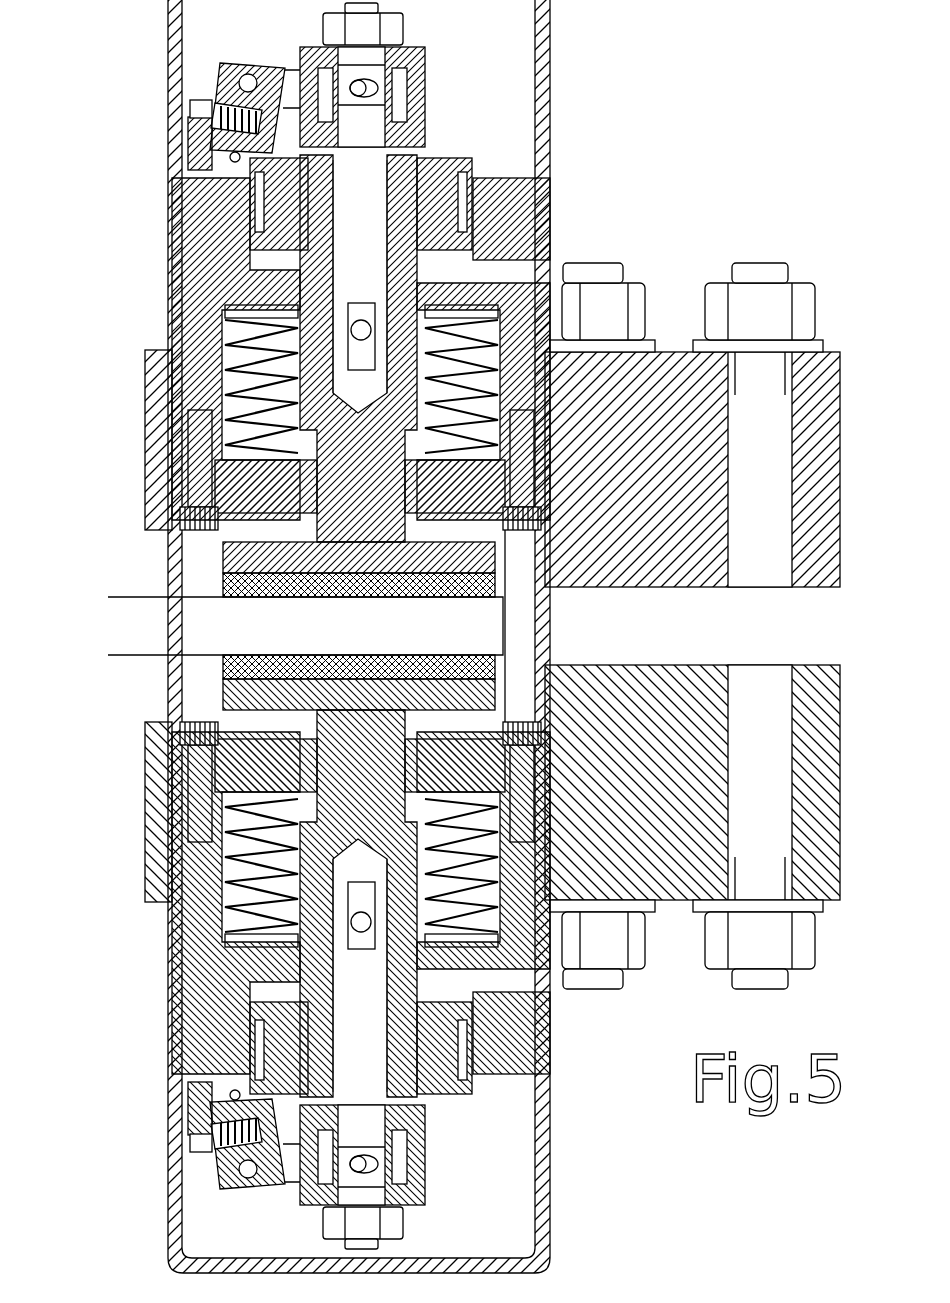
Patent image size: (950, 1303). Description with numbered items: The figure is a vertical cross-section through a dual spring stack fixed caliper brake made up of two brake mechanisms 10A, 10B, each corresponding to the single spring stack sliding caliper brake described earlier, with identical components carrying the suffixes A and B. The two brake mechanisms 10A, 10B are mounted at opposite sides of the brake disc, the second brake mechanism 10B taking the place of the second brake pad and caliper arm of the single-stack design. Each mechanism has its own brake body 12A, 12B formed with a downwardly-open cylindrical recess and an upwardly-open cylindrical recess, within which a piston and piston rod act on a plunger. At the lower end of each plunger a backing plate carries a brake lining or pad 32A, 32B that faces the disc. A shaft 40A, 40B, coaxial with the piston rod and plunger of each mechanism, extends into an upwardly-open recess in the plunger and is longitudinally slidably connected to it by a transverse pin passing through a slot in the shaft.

The brake mechanism 10A is at (617, 170).
The brake mechanism 10B is at (610, 1108).
The brake body 12A is at (523, 238).
The brake body 12B is at (523, 1043).
The first brake lining or pad 32A is at (298, 590).
The first brake lining or pad 32B is at (448, 657).
The shaft 40A is at (385, 197).
The shaft 40B is at (385, 1077).